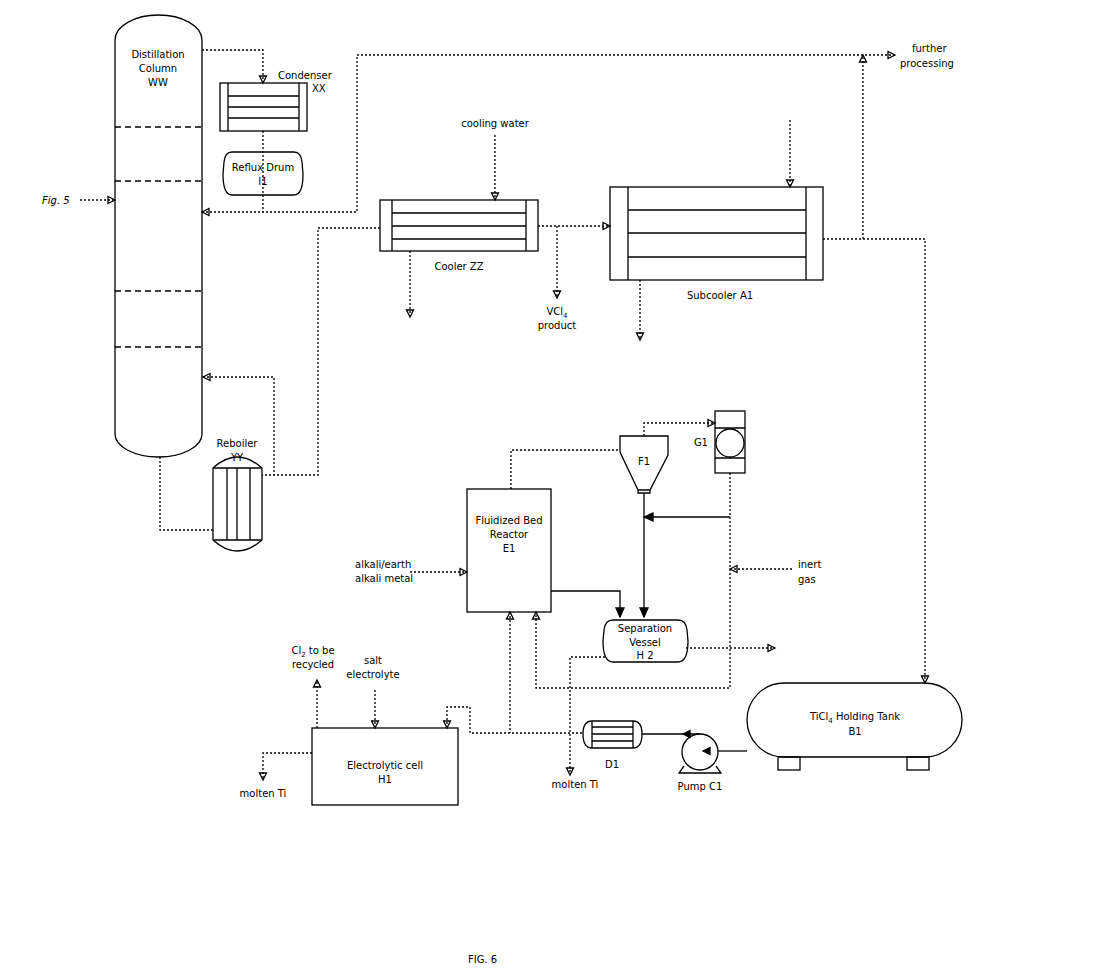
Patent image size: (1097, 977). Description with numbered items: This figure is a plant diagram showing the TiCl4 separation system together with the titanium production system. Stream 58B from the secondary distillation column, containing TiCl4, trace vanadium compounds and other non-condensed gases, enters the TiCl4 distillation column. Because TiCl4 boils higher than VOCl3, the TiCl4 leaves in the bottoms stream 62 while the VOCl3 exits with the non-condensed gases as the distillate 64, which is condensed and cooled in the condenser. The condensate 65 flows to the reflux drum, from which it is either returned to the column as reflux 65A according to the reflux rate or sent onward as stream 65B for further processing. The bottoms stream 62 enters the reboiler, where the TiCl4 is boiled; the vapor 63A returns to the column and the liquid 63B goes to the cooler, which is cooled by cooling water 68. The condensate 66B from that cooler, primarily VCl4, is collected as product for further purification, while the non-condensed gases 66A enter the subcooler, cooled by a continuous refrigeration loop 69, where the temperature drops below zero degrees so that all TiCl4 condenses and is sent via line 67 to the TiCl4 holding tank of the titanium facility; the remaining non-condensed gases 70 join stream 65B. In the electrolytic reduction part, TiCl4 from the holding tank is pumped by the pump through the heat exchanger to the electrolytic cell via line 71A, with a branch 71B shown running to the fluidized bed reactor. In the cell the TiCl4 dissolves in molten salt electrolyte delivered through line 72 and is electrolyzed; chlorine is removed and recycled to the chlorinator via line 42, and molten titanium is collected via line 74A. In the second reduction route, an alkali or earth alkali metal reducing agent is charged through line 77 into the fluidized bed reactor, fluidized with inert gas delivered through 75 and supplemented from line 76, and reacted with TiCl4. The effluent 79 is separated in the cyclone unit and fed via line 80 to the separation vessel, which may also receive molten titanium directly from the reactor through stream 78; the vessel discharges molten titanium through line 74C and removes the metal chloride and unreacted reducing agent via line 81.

The stream from the secondary distillation column 58B is at (97, 194).
The distillate 64 is at (234, 57).
The condensate 65 is at (273, 171).
The reflux stream 65A is at (279, 141).
The stream for further processing 65B is at (626, 63).
The bottoms stream 62 is at (186, 493).
The vapor 63A is at (250, 425).
The liquid 63B is at (321, 351).
The cooling water stream 68 is at (503, 167).
The non-condensed gases 66A is at (574, 219).
The condensate 66B is at (545, 262).
The refrigeration loop stream 69 is at (780, 153).
The line to the titanium production facility 67 is at (876, 454).
The non-condensed gases 70 is at (871, 147).
The effluent stream 79 is at (555, 469).
The line to separation vessel 80 is at (685, 555).
The inert gas line 75 is at (641, 580).
The molten titanium stream 78 is at (587, 597).
The reducing agent line 77 is at (438, 567).
The additional inert gas line 76 is at (761, 578).
The chloride removal line 81 is at (730, 641).
The molten titanium line 74C is at (574, 716).
The TiCl4 feed stream to reactor 71B is at (520, 672).
The TiCl4 feed line 71A is at (514, 727).
The chlorine recycle line 42 is at (309, 704).
The molten salt electrolyte line 72 is at (370, 707).
The molten titanium line 74A is at (286, 757).